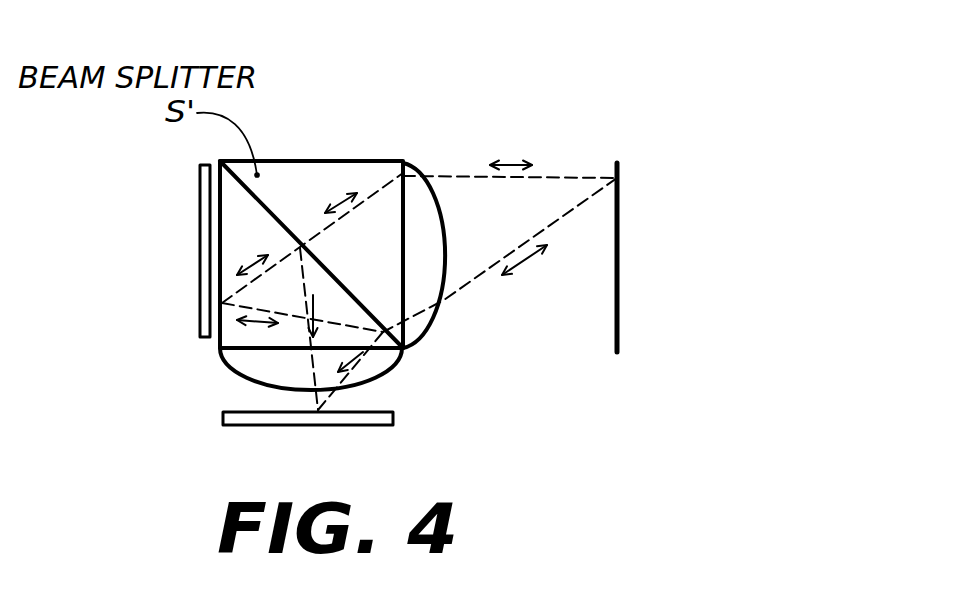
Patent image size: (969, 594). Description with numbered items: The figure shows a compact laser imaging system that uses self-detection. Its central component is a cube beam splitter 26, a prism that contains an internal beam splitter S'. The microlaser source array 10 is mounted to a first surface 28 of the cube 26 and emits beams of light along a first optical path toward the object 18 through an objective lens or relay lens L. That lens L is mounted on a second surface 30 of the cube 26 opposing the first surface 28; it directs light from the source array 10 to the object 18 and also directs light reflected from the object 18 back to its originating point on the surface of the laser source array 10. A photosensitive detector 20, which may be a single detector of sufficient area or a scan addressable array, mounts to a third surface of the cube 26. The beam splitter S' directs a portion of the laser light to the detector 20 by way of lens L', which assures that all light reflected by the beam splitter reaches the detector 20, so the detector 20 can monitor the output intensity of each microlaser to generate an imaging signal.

The cube beam splitter 26 is at (312, 158).
The second surface 30 is at (406, 165).
The microlaser source array 10 is at (116, 265).
The first surface 28 is at (357, 382).
The photosensitive detector 20 is at (406, 450).
The object 18 is at (708, 257).